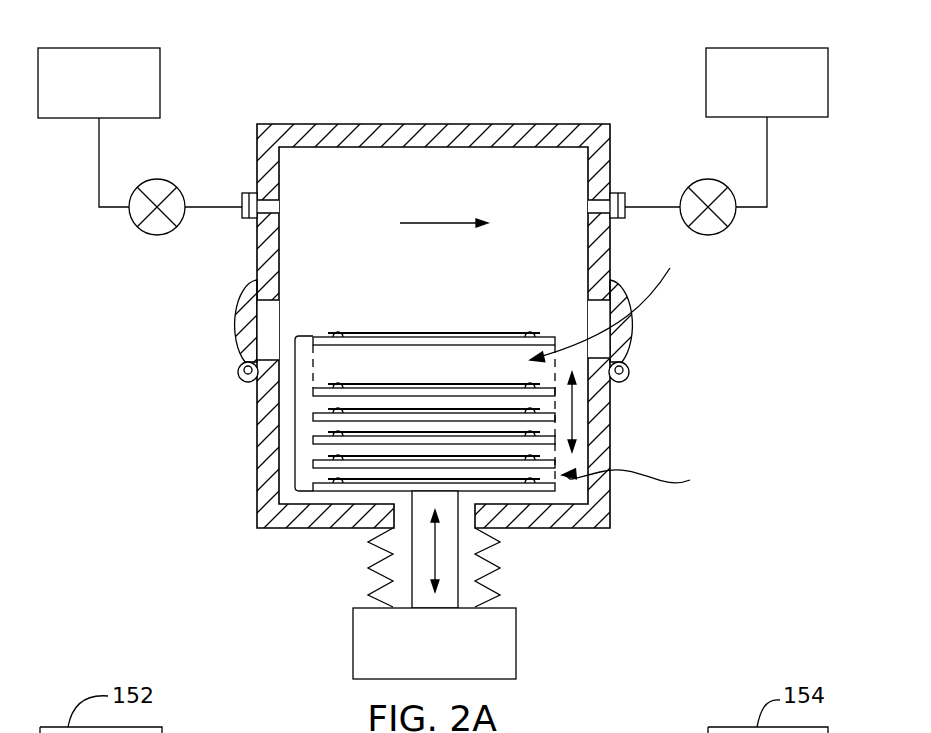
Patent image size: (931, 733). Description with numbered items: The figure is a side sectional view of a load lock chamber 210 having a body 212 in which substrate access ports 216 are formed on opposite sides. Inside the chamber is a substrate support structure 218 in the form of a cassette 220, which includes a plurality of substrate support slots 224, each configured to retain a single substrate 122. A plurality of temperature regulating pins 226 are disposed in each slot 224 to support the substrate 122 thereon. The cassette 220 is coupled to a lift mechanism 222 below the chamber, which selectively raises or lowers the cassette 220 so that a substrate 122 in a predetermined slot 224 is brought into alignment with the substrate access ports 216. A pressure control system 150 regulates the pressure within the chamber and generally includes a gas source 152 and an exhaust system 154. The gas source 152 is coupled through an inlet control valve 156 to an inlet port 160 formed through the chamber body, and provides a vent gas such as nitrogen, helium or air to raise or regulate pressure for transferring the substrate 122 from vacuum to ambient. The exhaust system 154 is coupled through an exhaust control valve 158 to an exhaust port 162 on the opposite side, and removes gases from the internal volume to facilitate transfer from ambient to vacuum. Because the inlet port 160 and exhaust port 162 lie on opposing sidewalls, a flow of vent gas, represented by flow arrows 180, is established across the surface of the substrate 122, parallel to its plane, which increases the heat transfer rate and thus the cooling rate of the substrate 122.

The pressure control system 150 is at (120, 33).
The gas source 152 is at (160, 92).
The exhaust system 154 is at (742, 48).
The inlet control valve 156 is at (148, 180).
The exhaust control valve 158 is at (722, 180).
The inlet port 160 is at (279, 212).
The exhaust port 162 is at (588, 212).
The flow arrows 180 is at (412, 222).
The load lock chamber 210 is at (442, 280).
The body 212 is at (538, 124).
The substrate access ports 216 is at (242, 357).
The substrate support structure 218 is at (648, 427).
The cassette 220 is at (363, 374).
The lift mechanism 222 is at (517, 641).
The substrate support slots 224 is at (616, 302).
The temperature regulating pins 226 is at (333, 331).
The substrate 122 is at (440, 374).